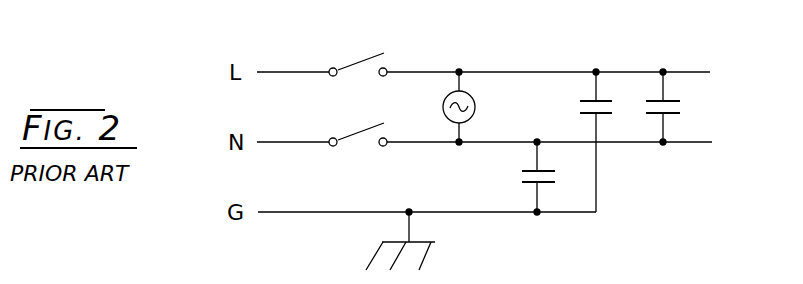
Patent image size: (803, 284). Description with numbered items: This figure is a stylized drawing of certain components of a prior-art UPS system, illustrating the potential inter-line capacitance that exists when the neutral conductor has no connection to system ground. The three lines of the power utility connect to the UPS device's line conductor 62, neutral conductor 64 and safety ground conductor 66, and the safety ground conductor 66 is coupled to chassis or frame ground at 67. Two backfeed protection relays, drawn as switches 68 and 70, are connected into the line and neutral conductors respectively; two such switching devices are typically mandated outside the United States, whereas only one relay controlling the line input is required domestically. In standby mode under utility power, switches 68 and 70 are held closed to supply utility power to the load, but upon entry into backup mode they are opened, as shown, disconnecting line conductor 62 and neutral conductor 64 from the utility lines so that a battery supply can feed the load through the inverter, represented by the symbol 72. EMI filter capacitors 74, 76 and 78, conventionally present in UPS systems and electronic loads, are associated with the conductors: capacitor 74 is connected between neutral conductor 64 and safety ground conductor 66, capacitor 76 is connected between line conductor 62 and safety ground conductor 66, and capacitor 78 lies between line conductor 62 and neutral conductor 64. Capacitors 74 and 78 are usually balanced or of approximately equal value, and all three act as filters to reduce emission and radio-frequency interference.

The line conductor 62 is at (294, 72).
The neutral conductor 64 is at (291, 142).
The safety ground conductor 66 is at (290, 212).
The chassis or frame ground 67 is at (435, 242).
The backfeed protection relay switch 68 is at (368, 58).
The backfeed protection relay switch 70 is at (370, 128).
The inverter 72 is at (478, 103).
The capacitor symbol 74 is at (522, 182).
The capacitor symbol 76 is at (585, 113).
The capacitor symbol 78 is at (675, 100).